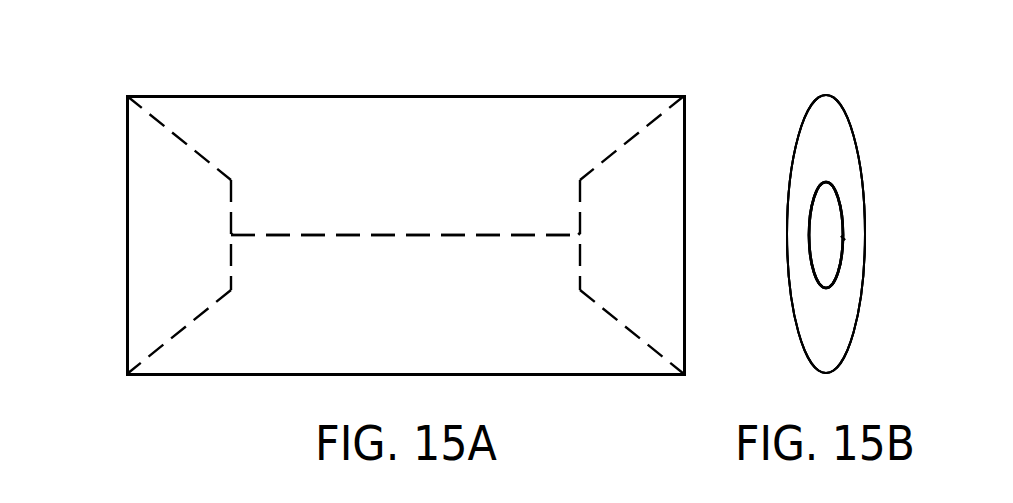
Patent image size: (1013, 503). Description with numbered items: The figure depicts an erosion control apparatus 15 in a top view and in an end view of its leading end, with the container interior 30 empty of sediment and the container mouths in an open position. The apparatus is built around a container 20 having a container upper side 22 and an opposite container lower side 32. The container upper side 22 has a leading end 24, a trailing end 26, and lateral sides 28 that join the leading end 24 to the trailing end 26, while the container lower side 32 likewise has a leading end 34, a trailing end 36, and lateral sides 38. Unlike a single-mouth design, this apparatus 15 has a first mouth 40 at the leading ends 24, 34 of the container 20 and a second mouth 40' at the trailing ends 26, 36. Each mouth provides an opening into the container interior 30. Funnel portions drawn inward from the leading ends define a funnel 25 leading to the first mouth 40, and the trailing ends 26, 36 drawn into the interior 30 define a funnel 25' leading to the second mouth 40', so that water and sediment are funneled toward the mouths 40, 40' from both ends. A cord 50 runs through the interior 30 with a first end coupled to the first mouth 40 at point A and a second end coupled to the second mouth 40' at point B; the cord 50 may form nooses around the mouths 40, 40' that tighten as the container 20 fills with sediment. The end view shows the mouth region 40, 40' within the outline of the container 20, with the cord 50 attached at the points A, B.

In FIG. 15A, the erosion control apparatus 15 is at (121, 55).
In FIG. 15A, the container 20 is at (666, 62).
In FIG. 15B, the container 20 is at (874, 100).
In FIG. 15B, the container upper side 22 is at (803, 118).
In FIG. 15A, the leading end 24 is at (126, 213).
In FIG. 15A, the leading end 34 is at (127, 235).
In FIG. 15A, the trailing end 26 is at (686, 232).
In FIG. 15A, the trailing end 36 is at (684, 235).
In FIG. 15A, the lateral sides 28 is at (440, 94).
In FIG. 15A, the lateral sides 38 is at (406, 96).
In FIG. 15A, the funnel 25 is at (179, 235).
In FIG. 15A, the funnel 25' is at (632, 235).
In FIG. 15A, the container interior 30 is at (411, 206).
In FIG. 15B, the container lower side 32 is at (860, 325).
In FIG. 15A, the first mouth 40 is at (262, 211).
In FIG. 15B, the first mouth 40 is at (783, 256).
In FIG. 15A, the second mouth 40' is at (546, 211).
In FIG. 15B, the second mouth 40' is at (826, 235).
In FIG. 15A, the cord 50 is at (447, 235).
In FIG. 15B, the cord 50 is at (843, 238).
In FIG. 15A, the point A is at (232, 233).
In FIG. 15B, the point A is at (843, 238).
In FIG. 15A, the point B is at (580, 230).
In FIG. 15B, the point B is at (843, 238).